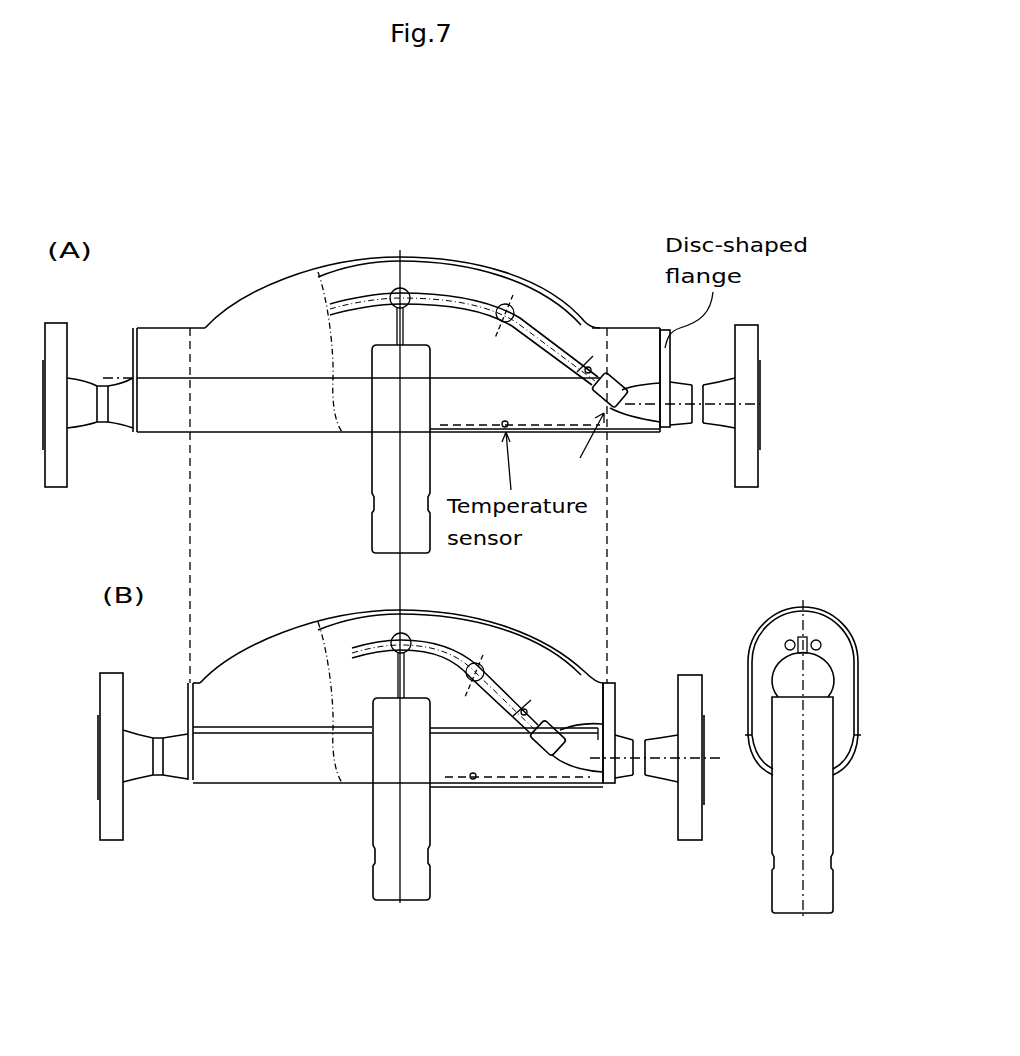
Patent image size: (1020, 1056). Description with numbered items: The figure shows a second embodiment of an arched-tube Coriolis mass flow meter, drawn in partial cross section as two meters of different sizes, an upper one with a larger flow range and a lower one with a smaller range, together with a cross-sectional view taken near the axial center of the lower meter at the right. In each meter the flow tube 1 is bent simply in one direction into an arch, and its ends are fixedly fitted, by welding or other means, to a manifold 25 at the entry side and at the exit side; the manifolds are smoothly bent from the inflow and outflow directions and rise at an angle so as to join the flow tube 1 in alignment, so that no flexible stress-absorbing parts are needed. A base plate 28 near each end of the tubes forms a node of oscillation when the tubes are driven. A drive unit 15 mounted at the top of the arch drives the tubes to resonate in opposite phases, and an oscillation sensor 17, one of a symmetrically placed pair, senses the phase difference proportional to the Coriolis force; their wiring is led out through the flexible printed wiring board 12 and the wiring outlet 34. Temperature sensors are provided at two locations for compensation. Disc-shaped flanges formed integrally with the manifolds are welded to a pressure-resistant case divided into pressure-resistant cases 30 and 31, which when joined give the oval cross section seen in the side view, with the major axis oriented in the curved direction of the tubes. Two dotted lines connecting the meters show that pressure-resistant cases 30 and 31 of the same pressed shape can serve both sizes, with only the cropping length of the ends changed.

The flow tube 1 is at (452, 297).
The flexible printed wiring board 12 is at (417, 650).
The drive unit 15 is at (407, 277).
The oscillation sensor 17 is at (520, 297).
The manifold 25 is at (635, 420).
The base plate 28 is at (525, 697).
The pressure-resistant case 30 is at (218, 773).
The pressure-resistant case 31 is at (772, 625).
The wiring outlet 34 is at (383, 481).